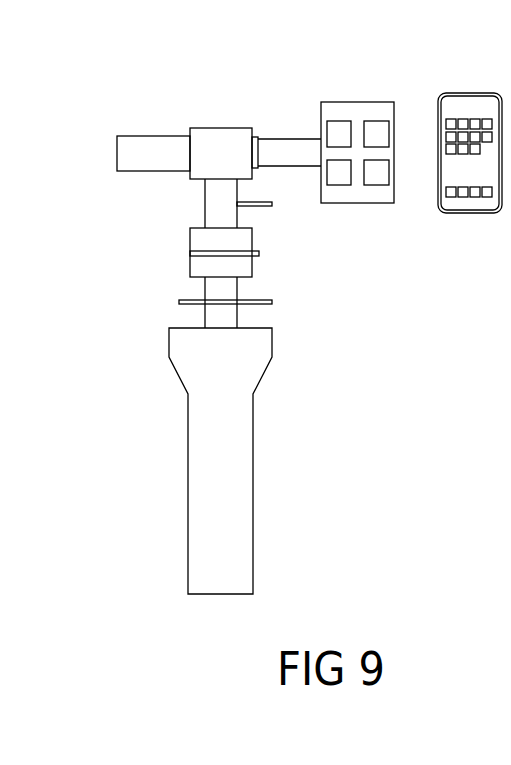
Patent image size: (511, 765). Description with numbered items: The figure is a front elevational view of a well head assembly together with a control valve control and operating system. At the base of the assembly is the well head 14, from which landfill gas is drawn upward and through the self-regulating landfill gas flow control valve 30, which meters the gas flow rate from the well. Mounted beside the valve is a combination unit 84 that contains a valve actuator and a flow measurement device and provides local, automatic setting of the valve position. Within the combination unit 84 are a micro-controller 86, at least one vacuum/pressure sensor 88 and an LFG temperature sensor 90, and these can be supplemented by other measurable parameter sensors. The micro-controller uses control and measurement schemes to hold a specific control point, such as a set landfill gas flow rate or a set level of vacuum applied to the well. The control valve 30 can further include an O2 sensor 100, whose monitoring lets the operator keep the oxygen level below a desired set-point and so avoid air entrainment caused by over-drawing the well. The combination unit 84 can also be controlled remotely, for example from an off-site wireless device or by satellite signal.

The well head 14 is at (190, 367).
The control valve 30 is at (219, 137).
The combination unit 84 is at (300, 107).
The micro-controller 86 is at (338, 130).
The vacuum/pressure sensor 88 is at (376, 130).
The LFG temperature sensor 90 is at (339, 178).
The O2 sensor 100 is at (378, 177).